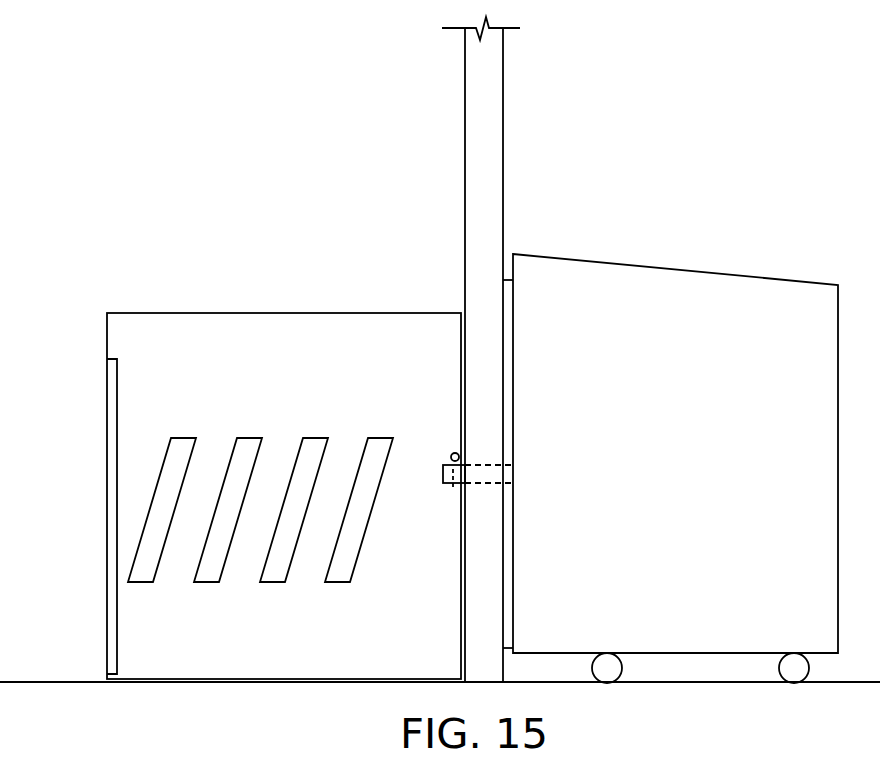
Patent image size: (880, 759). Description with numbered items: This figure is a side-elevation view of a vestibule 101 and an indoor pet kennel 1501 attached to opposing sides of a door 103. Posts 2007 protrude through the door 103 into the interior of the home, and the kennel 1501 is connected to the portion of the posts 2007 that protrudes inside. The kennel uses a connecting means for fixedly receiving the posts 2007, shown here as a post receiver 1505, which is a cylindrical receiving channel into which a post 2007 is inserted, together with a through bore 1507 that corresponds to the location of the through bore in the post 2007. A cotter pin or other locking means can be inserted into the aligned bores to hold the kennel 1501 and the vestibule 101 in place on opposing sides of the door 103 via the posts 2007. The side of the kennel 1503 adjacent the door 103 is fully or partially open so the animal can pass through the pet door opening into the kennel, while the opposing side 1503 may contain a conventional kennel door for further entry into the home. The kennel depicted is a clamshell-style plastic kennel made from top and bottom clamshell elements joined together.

The vestibule 101 is at (684, 284).
The door 103 is at (497, 98).
The kennel 1501 is at (133, 325).
The side of the kennel 1503 is at (108, 472).
The post receiver 1505 is at (463, 452).
The through bore 1507 is at (448, 455).
The post 2007 is at (483, 475).